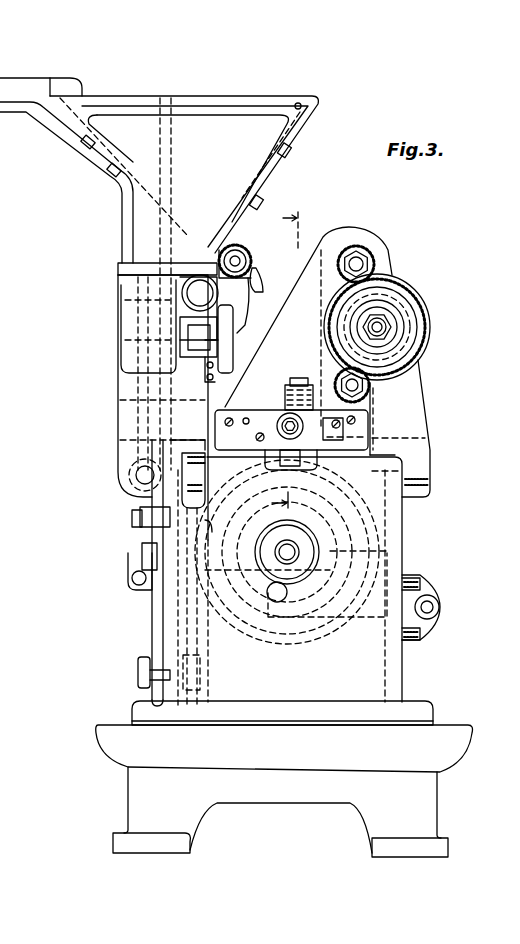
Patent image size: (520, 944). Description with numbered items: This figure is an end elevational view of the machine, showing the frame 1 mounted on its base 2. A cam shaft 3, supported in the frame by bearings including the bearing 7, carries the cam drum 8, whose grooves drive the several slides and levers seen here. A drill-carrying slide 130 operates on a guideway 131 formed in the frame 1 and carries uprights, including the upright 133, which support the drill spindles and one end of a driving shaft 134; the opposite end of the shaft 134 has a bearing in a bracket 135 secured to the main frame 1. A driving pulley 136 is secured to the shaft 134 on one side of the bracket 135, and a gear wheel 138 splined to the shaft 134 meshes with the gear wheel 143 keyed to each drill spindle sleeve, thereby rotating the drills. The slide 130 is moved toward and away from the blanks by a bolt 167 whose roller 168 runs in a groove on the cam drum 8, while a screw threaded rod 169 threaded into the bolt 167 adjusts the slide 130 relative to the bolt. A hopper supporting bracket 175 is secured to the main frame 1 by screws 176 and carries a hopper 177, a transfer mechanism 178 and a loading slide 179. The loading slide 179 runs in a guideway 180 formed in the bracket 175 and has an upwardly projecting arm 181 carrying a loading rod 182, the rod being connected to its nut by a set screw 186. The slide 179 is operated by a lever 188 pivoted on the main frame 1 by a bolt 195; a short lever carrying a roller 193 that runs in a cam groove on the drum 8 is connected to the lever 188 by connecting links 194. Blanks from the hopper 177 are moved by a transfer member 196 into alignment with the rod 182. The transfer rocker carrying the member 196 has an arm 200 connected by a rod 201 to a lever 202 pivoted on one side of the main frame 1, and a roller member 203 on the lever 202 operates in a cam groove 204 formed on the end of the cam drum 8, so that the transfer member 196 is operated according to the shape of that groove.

The frame 1 is at (398, 677).
The base 2 is at (130, 782).
The cam shaft 3 is at (293, 552).
The bearing 7 is at (285, 361).
The cam drum 8 is at (325, 646).
The drill-carrying slide 130 is at (258, 409).
The guideway 131 is at (370, 437).
The upright 133 is at (325, 237).
The driving shaft 134 is at (380, 327).
The bracket 135 is at (415, 392).
The driving pulley 136 is at (428, 305).
The gear wheel 138 is at (396, 278).
The gear wheel 143 is at (375, 242).
The bolt 167 is at (300, 378).
The roller 168 is at (258, 443).
The screw threaded rod 169 is at (280, 414).
The hopper supporting bracket 175 is at (117, 455).
The screws 176 is at (135, 490).
The hopper 177 is at (121, 200).
The transfer mechanism 178 is at (256, 260).
The loading slide 179 is at (282, 333).
The guideway 180 is at (236, 333).
The upwardly projecting arm 181 is at (249, 308).
The loading rod 182 is at (233, 271).
The set screw 186 is at (250, 240).
The lever 188 is at (150, 615).
The roller 193 is at (212, 525).
The connecting links 194 is at (140, 535).
The bolt 195 is at (137, 676).
The transfer member 196 is at (259, 285).
The arm 200 is at (190, 243).
The rod 201 is at (125, 420).
The lever 202 is at (201, 587).
The roller member 203 is at (287, 567).
The cam groove 204 is at (402, 551).